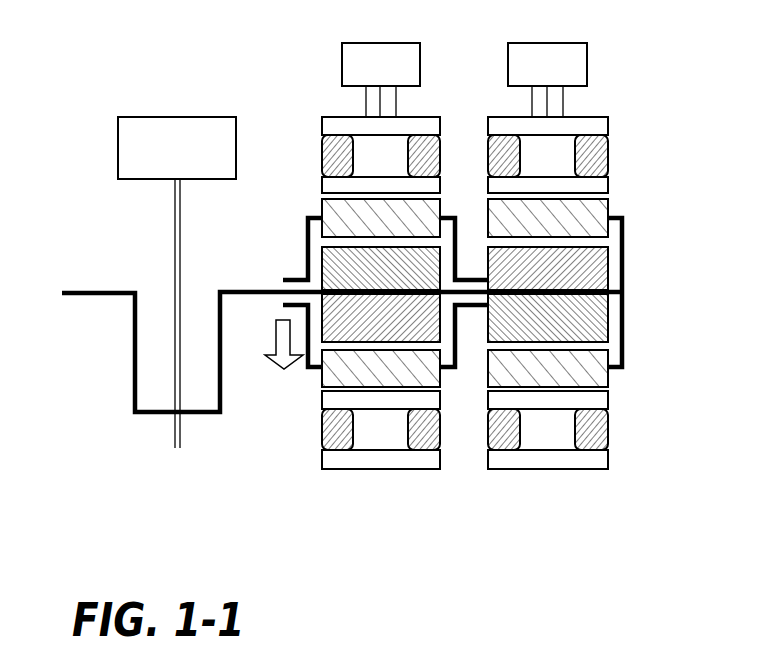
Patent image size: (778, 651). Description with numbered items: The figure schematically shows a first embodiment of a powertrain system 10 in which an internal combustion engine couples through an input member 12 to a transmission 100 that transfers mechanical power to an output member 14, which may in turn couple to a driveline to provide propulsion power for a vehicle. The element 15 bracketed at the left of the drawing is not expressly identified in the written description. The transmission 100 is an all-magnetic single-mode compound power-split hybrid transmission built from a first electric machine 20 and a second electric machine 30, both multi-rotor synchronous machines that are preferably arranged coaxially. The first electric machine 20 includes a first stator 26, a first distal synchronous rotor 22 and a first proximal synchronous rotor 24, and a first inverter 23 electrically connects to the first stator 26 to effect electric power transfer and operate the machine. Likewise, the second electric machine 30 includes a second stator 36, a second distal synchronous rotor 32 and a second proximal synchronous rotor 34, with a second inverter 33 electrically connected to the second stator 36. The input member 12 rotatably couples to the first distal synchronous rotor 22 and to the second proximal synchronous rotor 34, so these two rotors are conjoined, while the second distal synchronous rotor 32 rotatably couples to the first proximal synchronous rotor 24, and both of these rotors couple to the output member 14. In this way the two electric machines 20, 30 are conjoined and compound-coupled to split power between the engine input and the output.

The powertrain system 10 is at (120, 85).
The input member 12 is at (247, 290).
The output member 14 is at (278, 321).
The position sensor assembly 15 is at (108, 457).
The first electric machine 20 is at (346, 290).
The first distal synchronous rotor 22 is at (320, 262).
The first inverter 23 is at (342, 62).
The first proximal synchronous rotor 24 is at (322, 382).
The first stator 26 is at (450, 477).
The second electric machine 30 is at (583, 293).
The second distal synchronous rotor 32 is at (608, 248).
The second inverter 33 is at (587, 62).
The second proximal synchronous rotor 34 is at (608, 207).
The second stator 36 is at (608, 157).
The transmission 100 is at (465, 329).